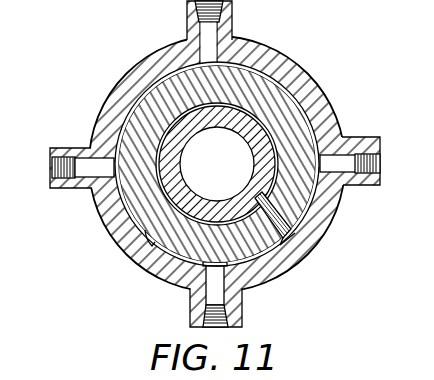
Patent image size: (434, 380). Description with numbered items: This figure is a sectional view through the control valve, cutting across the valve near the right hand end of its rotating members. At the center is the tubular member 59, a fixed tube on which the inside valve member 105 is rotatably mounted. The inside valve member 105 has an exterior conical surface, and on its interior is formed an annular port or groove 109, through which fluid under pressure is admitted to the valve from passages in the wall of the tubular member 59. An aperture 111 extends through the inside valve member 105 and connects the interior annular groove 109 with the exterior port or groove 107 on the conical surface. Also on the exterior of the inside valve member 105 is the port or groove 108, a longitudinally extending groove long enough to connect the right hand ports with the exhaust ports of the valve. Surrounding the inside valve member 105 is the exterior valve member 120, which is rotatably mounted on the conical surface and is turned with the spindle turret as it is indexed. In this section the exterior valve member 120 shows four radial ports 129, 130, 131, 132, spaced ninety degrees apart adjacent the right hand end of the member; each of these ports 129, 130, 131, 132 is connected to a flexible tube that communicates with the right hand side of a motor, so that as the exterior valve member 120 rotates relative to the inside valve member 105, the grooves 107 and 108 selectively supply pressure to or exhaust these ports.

The tubular member 59 is at (178, 136).
The inside valve member 105 is at (330, 110).
The port or groove 107 is at (257, 74).
The port or groove 108 is at (250, 278).
The annular port or groove 109 is at (249, 194).
The aperture 111 is at (303, 244).
The exterior valve member 120 is at (295, 132).
The port 129 is at (233, 28).
The port 130 is at (82, 160).
The port 131 is at (242, 305).
The port 132 is at (350, 172).